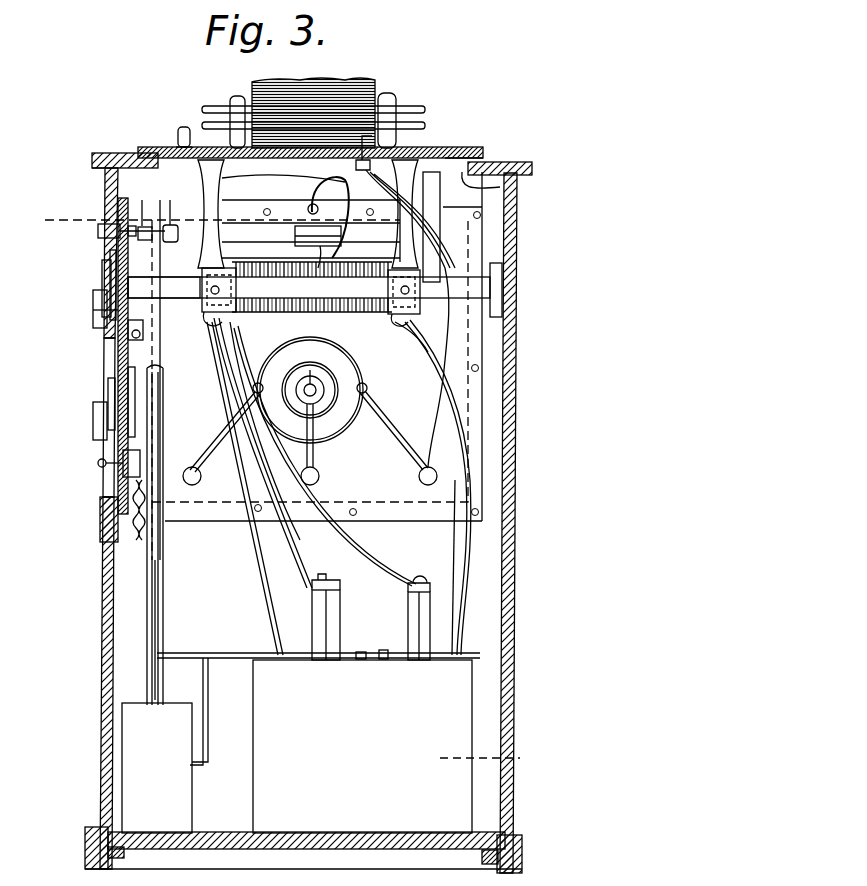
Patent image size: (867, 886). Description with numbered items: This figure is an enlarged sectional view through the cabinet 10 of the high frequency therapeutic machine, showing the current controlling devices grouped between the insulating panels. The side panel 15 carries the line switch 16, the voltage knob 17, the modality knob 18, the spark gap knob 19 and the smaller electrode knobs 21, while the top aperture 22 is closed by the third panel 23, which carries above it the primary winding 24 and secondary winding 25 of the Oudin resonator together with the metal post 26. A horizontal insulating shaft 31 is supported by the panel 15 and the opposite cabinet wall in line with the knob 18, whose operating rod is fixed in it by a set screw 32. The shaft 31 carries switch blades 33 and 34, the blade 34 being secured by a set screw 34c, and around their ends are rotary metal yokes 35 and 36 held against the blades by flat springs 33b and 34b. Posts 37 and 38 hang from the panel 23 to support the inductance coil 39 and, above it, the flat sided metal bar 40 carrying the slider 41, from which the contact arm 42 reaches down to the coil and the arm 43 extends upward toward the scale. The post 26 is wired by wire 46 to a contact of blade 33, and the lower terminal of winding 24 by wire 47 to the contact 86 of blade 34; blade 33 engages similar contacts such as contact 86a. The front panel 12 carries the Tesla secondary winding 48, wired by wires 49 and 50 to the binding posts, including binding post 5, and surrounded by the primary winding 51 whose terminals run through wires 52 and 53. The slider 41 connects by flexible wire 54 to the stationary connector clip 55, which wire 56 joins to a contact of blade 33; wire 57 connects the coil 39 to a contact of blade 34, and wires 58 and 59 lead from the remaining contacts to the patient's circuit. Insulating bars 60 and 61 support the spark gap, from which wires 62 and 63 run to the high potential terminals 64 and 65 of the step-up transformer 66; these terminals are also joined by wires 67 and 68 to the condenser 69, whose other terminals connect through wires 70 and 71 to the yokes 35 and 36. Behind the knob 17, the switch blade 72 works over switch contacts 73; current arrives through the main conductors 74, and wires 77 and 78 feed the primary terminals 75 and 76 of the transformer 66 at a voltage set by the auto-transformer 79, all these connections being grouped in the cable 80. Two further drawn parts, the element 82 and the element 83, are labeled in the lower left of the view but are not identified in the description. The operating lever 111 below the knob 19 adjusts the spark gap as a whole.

The binding post 5 is at (314, 394).
The cabinet 10 is at (512, 224).
The first panel 12 is at (64, 232).
The second insulating panel 15 is at (118, 348).
The line switch 16 is at (98, 464).
The first knob 17 is at (93, 408).
The second knob 18 is at (102, 268).
The third knob 19 is at (96, 312).
The smaller knobs 21 is at (100, 232).
The aperture 22 is at (482, 178).
The third panel 23 is at (478, 160).
The primary winding 24 is at (412, 108).
The secondary winding 25 is at (300, 82).
The metal post 26 is at (184, 127).
The shaft 31 is at (492, 285).
The set screw 32 is at (100, 298).
The switch blade 33 is at (210, 242).
The flat spring 33b is at (138, 300).
The switch blade 34 is at (400, 252).
The flat spring 34b is at (452, 322).
The set screw 34c is at (407, 338).
The metal yoke 35 is at (222, 318).
The metal yoke 36 is at (390, 310).
The post 37 is at (104, 180).
The post 38 is at (440, 187).
The inductance coil 39 is at (310, 312).
The flat sided metal bar 40 is at (246, 236).
The metal slider 41 is at (296, 238).
The contact arm 42 is at (305, 256).
The arm 43 is at (311, 211).
The wire 46 is at (143, 150).
The wire 47 is at (375, 152).
The secondary winding 48 is at (298, 405).
The wire 49 is at (300, 374).
The wire 50 is at (314, 458).
The primary winding 51 is at (285, 345).
The wire 52 is at (390, 424).
The wire 53 is at (226, 420).
The flexible wire 54 is at (346, 196).
The connector clip 55 is at (310, 200).
The wire 56 is at (283, 183).
The wire 57 is at (455, 262).
The wire 58 is at (208, 350).
The wire 59 is at (455, 344).
The bar of insulating material 60 is at (141, 202).
The bar of insulating material 61 is at (171, 202).
The wire 62 is at (278, 532).
The wire 63 is at (340, 556).
The high potential terminal 64 is at (326, 583).
The high potential terminal 65 is at (422, 580).
The step-up transformer 66 is at (522, 760).
The wire 67 is at (341, 608).
The wire 68 is at (408, 608).
The condenser 69 is at (460, 720).
The wire 70 is at (250, 548).
The wire 71 is at (460, 600).
The switch blade 72 is at (108, 390).
The switch contacts 73 is at (128, 372).
The main alternating current conductors 74 is at (110, 530).
The primary winding terminal 75 is at (358, 652).
The primary winding terminal 76 is at (383, 650).
The wire 77 is at (220, 652).
The wire 78 is at (248, 652).
The auto-transformer 79 is at (132, 742).
The cable 80 is at (160, 582).
The tube 82 is at (210, 712).
The chain 83 is at (206, 735).
The switch contact 86 is at (464, 144).
The switch contact 86a is at (120, 158).
The operating lever 111 is at (128, 328).